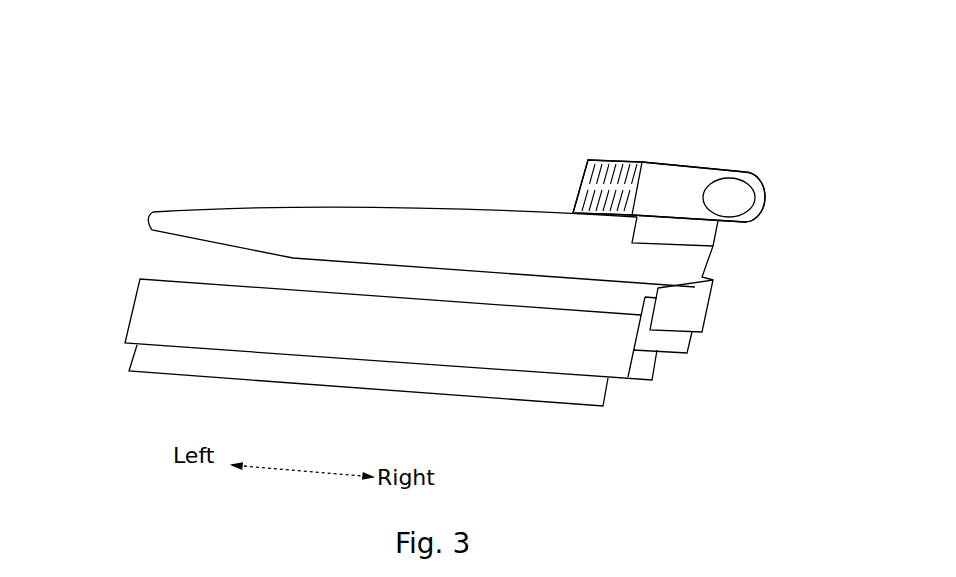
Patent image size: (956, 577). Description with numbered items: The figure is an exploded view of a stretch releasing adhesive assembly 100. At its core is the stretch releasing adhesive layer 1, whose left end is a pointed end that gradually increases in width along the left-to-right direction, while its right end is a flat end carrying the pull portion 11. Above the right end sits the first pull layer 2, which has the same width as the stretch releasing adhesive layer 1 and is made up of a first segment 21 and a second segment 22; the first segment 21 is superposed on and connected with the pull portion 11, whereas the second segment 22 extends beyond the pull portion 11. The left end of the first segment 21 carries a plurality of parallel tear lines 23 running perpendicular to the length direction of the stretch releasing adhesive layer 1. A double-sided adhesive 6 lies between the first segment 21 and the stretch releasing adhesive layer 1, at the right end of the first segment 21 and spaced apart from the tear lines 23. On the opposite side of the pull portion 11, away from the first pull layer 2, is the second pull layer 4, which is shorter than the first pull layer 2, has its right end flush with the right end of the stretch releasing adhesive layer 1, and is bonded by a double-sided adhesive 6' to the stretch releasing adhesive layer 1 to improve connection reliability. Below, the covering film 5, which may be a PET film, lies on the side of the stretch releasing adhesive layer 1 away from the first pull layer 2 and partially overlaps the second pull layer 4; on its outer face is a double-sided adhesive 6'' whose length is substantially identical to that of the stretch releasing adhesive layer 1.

The stretch releasing adhesive assembly 100 is at (113, 82).
The stretch releasing adhesive layer 1 is at (348, 232).
The first pull layer 2 is at (808, 90).
The first segment 21 is at (658, 175).
The second segment 22 is at (742, 180).
The tear lines 23 is at (600, 167).
The double-sided adhesive 6 is at (717, 258).
The pull portion 11 is at (688, 268).
The second pull layer 4 is at (690, 352).
The double-sided adhesive 6' is at (719, 337).
The covering film 5 is at (600, 352).
The double-sided adhesive 6'' is at (368, 410).